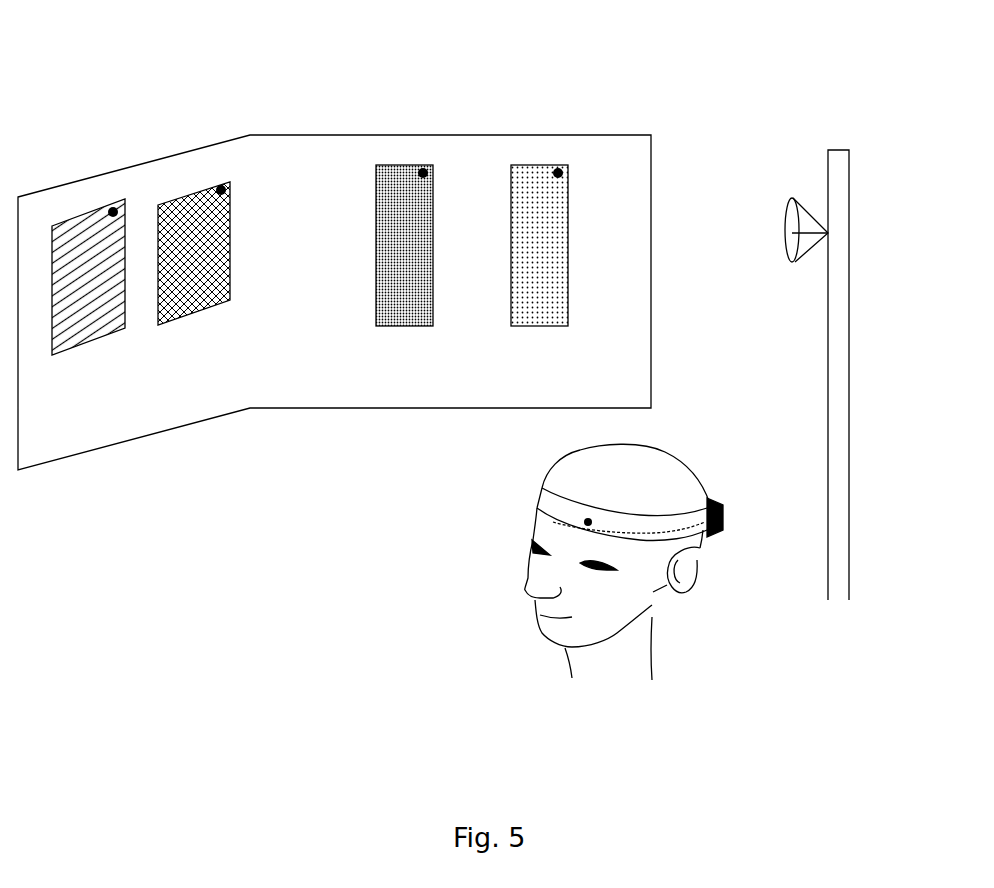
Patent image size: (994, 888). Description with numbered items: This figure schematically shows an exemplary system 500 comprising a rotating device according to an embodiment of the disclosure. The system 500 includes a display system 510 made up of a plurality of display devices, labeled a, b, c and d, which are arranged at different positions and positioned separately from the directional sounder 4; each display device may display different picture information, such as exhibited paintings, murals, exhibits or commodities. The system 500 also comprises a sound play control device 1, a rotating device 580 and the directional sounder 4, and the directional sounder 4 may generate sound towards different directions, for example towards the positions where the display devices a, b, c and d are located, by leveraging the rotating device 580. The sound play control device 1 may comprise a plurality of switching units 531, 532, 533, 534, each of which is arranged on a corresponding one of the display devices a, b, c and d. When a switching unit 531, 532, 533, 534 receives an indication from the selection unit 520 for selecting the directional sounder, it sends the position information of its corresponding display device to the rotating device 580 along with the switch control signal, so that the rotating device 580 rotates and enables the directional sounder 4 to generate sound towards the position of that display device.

The system 500 is at (470, 60).
The display system 510 is at (355, 138).
The switching unit 531 is at (116, 205).
The switching unit 532 is at (224, 184).
The switching unit 533 is at (425, 168).
The switching unit 534 is at (560, 168).
The sound play control device 1 is at (537, 495).
The selection unit 520 is at (591, 516).
The directional sounder 4 is at (795, 197).
The rotating device 580 is at (849, 343).